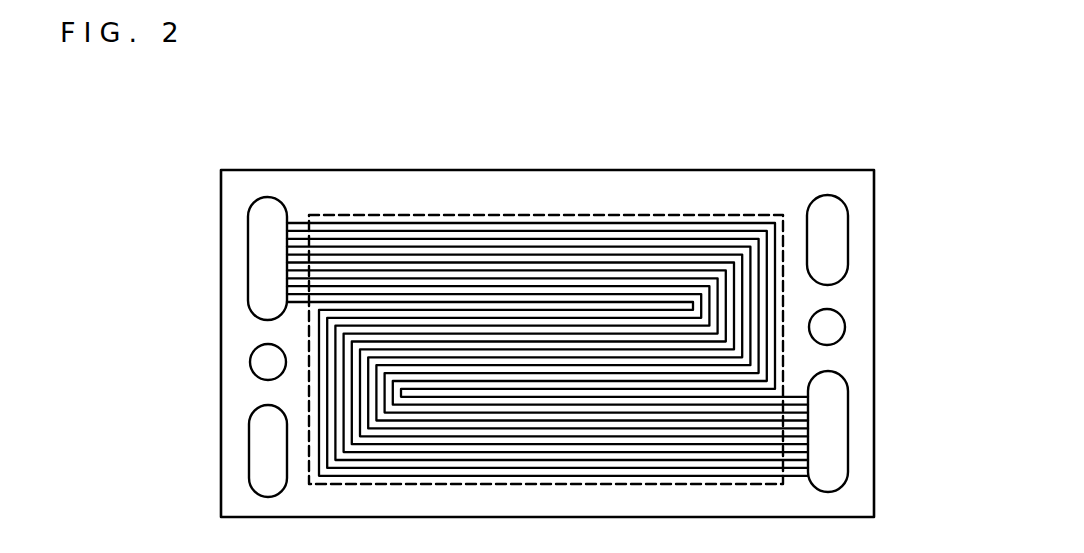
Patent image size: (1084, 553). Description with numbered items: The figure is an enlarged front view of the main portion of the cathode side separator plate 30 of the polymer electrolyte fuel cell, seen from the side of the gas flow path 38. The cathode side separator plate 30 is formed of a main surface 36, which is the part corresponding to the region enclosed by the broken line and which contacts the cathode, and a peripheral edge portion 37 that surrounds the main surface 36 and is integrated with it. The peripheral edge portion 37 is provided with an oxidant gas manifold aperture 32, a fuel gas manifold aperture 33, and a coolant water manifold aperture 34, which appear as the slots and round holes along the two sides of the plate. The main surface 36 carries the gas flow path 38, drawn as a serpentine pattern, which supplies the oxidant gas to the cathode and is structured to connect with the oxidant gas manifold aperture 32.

The cathode side separator plate 30 is at (630, 170).
The oxidant gas manifold aperture 32 is at (262, 246).
The fuel gas manifold aperture 33 is at (268, 444).
The coolant water manifold aperture 34 is at (265, 363).
The main surface 36 is at (547, 215).
The peripheral edge portion 37 is at (796, 182).
The gas flow path 38 is at (362, 218).